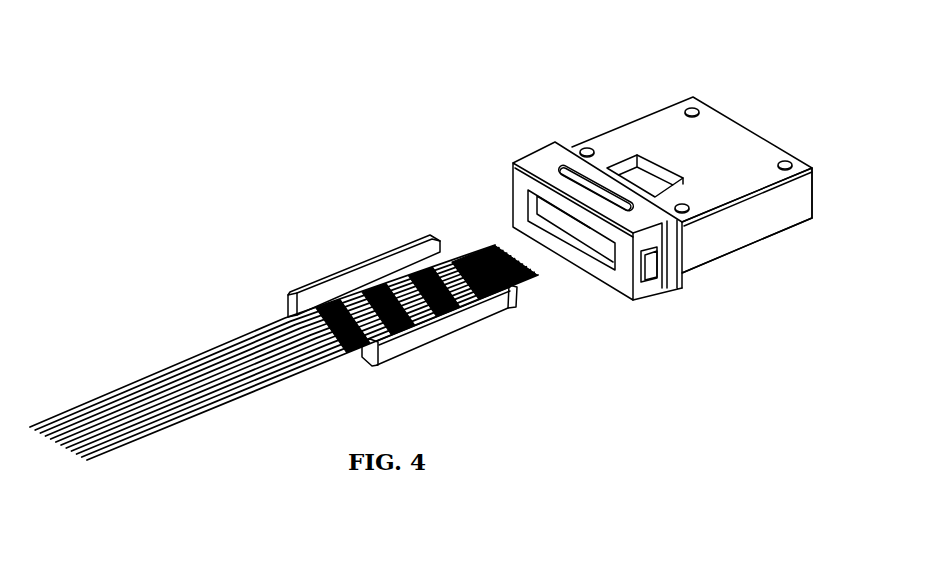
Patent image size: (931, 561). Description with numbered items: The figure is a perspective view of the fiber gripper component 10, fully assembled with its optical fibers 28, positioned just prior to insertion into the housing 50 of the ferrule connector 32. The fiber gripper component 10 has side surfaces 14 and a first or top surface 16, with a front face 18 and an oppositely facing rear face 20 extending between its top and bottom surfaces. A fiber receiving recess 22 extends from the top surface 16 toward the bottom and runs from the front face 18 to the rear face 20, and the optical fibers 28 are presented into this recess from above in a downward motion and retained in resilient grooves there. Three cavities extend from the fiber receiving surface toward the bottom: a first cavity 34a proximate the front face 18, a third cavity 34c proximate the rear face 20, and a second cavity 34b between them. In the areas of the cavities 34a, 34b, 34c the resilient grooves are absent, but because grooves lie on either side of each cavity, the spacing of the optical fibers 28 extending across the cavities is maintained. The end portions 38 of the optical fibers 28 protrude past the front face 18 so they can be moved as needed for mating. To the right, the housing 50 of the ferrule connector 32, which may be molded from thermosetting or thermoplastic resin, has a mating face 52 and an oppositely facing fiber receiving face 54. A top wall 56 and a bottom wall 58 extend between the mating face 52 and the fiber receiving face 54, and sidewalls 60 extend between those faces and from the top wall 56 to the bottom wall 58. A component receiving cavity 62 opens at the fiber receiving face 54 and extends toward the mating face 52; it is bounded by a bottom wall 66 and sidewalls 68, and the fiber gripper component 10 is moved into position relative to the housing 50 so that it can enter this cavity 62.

The fiber gripper component 10 is at (366, 217).
The side surfaces 14 is at (440, 348).
The top surface 16 is at (418, 238).
The front face 18 is at (518, 298).
The rear face 20 is at (365, 357).
The fiber receiving recess 22 is at (364, 231).
The optical fibers 28 is at (173, 393).
The ferrule connector 32 is at (649, 182).
The first cavity 34a is at (410, 260).
The second cavity 34b is at (366, 290).
The third cavity 34c is at (320, 303).
The end portions 38 is at (470, 247).
The ferrule housing 50 is at (678, 117).
The mating face 52 is at (813, 188).
The fiber receiving face 54 is at (564, 257).
The top wall 56 is at (735, 150).
The bottom wall 58 is at (753, 244).
The sidewalls 60 is at (790, 212).
The component receiving cavity 62 is at (572, 230).
The bottom wall of cavity 66 is at (610, 248).
The sidewalls of cavity 68 is at (522, 217).